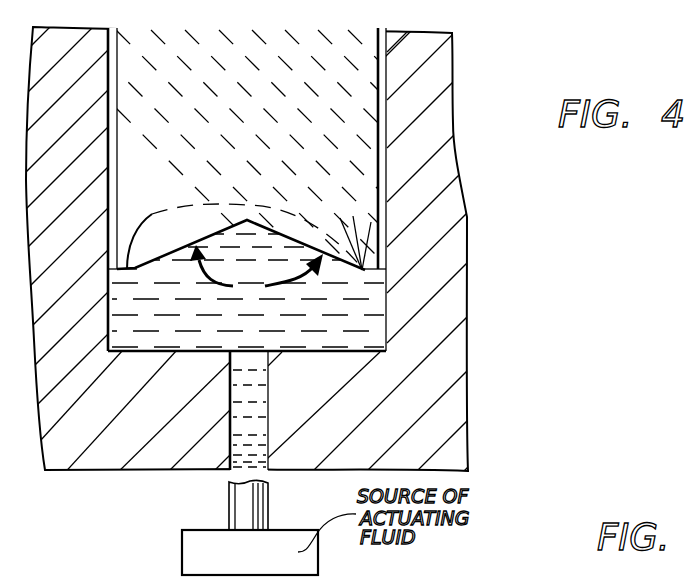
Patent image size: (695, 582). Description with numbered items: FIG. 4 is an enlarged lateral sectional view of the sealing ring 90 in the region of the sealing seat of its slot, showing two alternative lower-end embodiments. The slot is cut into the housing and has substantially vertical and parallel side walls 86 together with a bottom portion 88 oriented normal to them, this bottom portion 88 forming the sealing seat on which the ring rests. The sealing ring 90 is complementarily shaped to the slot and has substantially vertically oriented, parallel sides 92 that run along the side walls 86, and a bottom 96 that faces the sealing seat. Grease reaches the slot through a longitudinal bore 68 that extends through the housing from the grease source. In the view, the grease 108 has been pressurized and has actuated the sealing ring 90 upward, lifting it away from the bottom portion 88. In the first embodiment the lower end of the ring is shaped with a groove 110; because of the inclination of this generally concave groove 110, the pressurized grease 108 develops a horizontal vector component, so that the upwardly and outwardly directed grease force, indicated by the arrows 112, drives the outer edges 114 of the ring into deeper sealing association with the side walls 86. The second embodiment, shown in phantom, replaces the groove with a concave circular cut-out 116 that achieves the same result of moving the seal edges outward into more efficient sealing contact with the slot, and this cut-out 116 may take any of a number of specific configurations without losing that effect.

The longitudinal bore 68 is at (269, 431).
The side walls 86 is at (108, 161).
The bottom portion 88 is at (160, 352).
The sealing ring 90 is at (268, 111).
The sides 92 is at (378, 136).
The bottom 96 is at (241, 234).
The grease 108 is at (345, 323).
The groove 110 is at (283, 244).
The arrows 112 is at (256, 271).
The outer edges 114 is at (137, 262).
The concave circular cut-out 116 is at (263, 187).